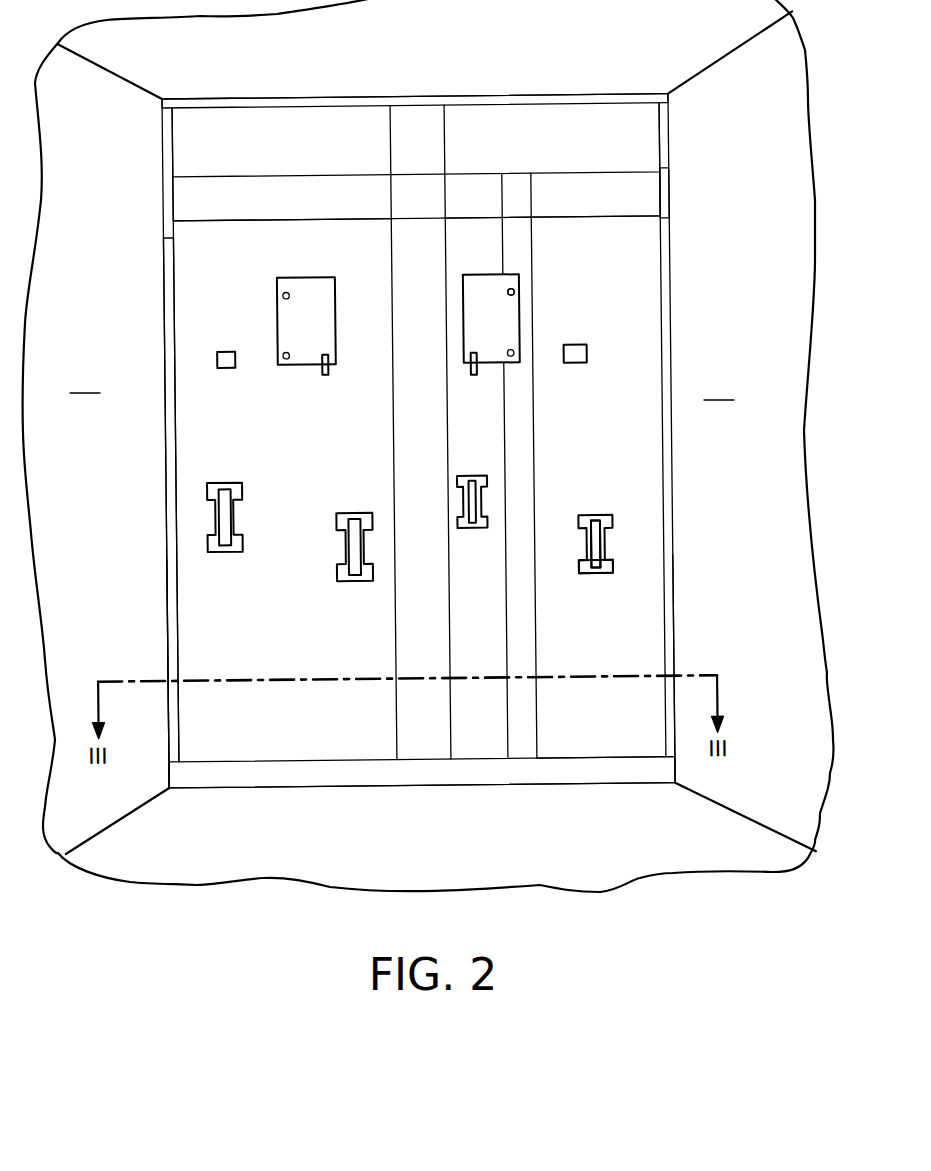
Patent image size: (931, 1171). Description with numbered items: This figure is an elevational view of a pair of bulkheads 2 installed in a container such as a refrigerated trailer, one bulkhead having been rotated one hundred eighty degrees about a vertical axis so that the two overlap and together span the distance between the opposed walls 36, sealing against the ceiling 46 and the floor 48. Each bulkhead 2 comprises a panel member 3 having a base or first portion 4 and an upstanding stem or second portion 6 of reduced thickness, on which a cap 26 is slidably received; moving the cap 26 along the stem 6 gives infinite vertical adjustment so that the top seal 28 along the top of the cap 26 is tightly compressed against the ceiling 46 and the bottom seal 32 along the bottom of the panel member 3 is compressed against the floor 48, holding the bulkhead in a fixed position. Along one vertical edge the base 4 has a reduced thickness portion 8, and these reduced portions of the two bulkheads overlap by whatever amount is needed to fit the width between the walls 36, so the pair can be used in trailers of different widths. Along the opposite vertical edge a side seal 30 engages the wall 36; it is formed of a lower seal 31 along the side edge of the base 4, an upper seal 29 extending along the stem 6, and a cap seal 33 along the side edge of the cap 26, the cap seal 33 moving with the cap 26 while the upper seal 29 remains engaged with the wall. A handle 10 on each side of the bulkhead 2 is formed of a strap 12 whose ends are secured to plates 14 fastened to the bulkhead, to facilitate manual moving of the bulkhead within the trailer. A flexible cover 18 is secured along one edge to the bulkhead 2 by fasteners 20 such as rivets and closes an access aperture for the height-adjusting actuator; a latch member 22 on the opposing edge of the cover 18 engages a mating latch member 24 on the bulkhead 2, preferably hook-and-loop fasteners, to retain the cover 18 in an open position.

The bulkhead 2 is at (560, 763).
The panel member 3 is at (436, 435).
The base or first portion 4 is at (281, 455).
The stem or second portion 6 is at (574, 213).
The reduced thickness portion 8 is at (425, 456).
The handle 10 is at (612, 532).
The strap 12 is at (588, 544).
The plate 14 is at (598, 578).
The cover 18 is at (473, 337).
The fastener 20 is at (513, 296).
The latch member 22 is at (471, 381).
The mating latch member 24 is at (576, 367).
The cap 26 is at (550, 158).
The top seal 28 is at (575, 99).
The upper seal 29 is at (662, 198).
The side seal 30 is at (157, 473).
The lower seal 31 is at (165, 588).
The bottom seal 32 is at (289, 786).
The cap seal 33 is at (165, 153).
The wall 36 is at (428, 446).
The ceiling 46 is at (453, 57).
The floor 48 is at (362, 878).